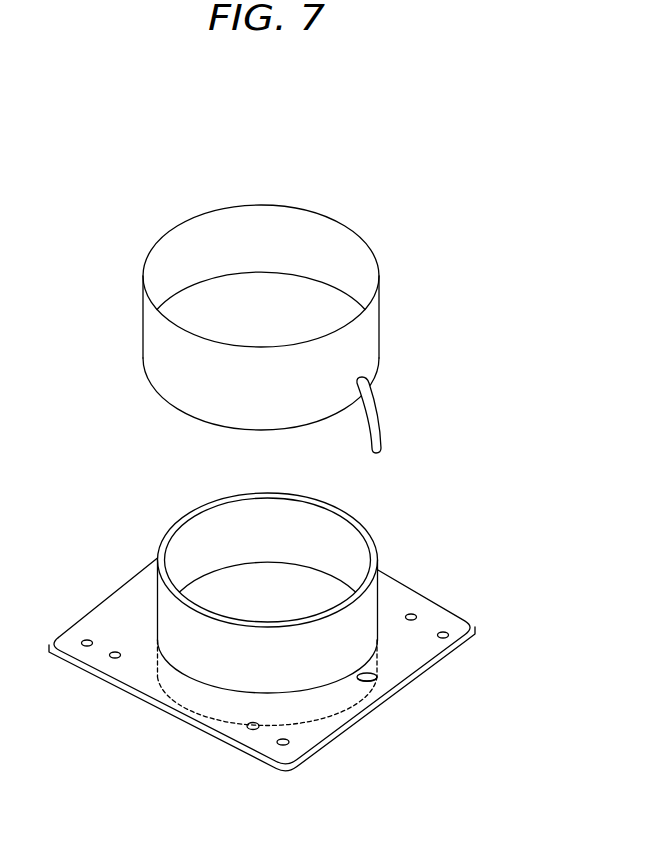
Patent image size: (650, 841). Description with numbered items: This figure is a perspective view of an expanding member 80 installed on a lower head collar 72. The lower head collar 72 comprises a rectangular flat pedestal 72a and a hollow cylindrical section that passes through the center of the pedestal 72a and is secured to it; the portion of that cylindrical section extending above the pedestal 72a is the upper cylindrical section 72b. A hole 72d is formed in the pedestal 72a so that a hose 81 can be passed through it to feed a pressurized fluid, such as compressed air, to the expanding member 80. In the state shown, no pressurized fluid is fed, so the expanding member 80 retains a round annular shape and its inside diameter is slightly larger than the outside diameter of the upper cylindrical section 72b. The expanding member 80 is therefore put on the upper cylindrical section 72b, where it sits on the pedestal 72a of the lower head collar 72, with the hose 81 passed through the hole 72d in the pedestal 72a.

The lower head collar 72 is at (291, 623).
The pedestal 72a is at (410, 603).
The upper cylindrical section 72b is at (368, 535).
The hole 72d is at (372, 683).
The expanding member 80 is at (370, 332).
The hose 81 is at (381, 426).